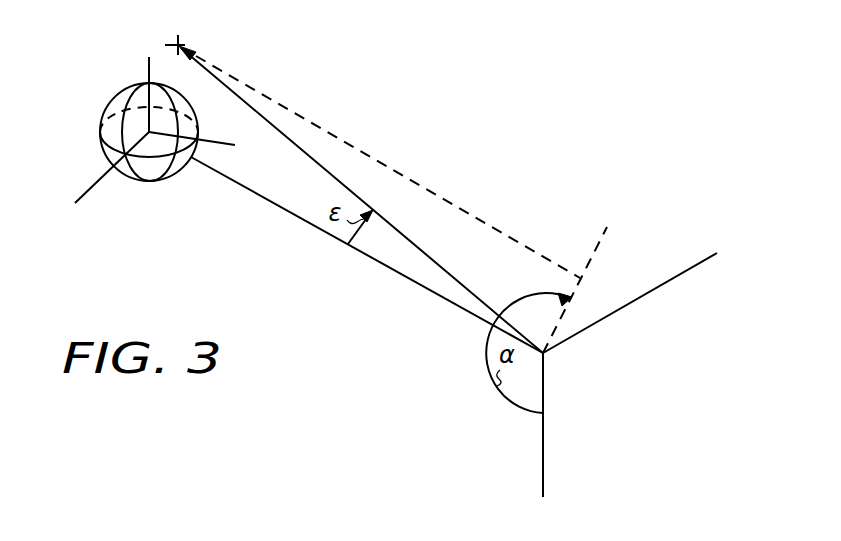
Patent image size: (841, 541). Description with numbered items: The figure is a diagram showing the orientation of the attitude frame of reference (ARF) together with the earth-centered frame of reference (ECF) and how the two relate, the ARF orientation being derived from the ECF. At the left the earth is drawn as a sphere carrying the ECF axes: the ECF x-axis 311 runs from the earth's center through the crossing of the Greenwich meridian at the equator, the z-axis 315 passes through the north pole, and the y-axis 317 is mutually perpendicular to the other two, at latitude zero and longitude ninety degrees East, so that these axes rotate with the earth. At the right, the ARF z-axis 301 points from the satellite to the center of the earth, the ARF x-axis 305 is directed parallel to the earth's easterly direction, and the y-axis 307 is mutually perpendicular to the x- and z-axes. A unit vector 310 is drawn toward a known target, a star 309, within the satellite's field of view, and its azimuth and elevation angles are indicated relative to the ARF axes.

The ARF z-axis 301 is at (378, 262).
The ARF x-axis 305 is at (643, 297).
The ARF y-axis 307 is at (544, 420).
The star 309 is at (185, 37).
The unit vector 310 is at (414, 246).
The ECF x-axis 311 is at (97, 188).
The ECF z-axis 315 is at (149, 71).
The ECF y-axis 317 is at (218, 141).